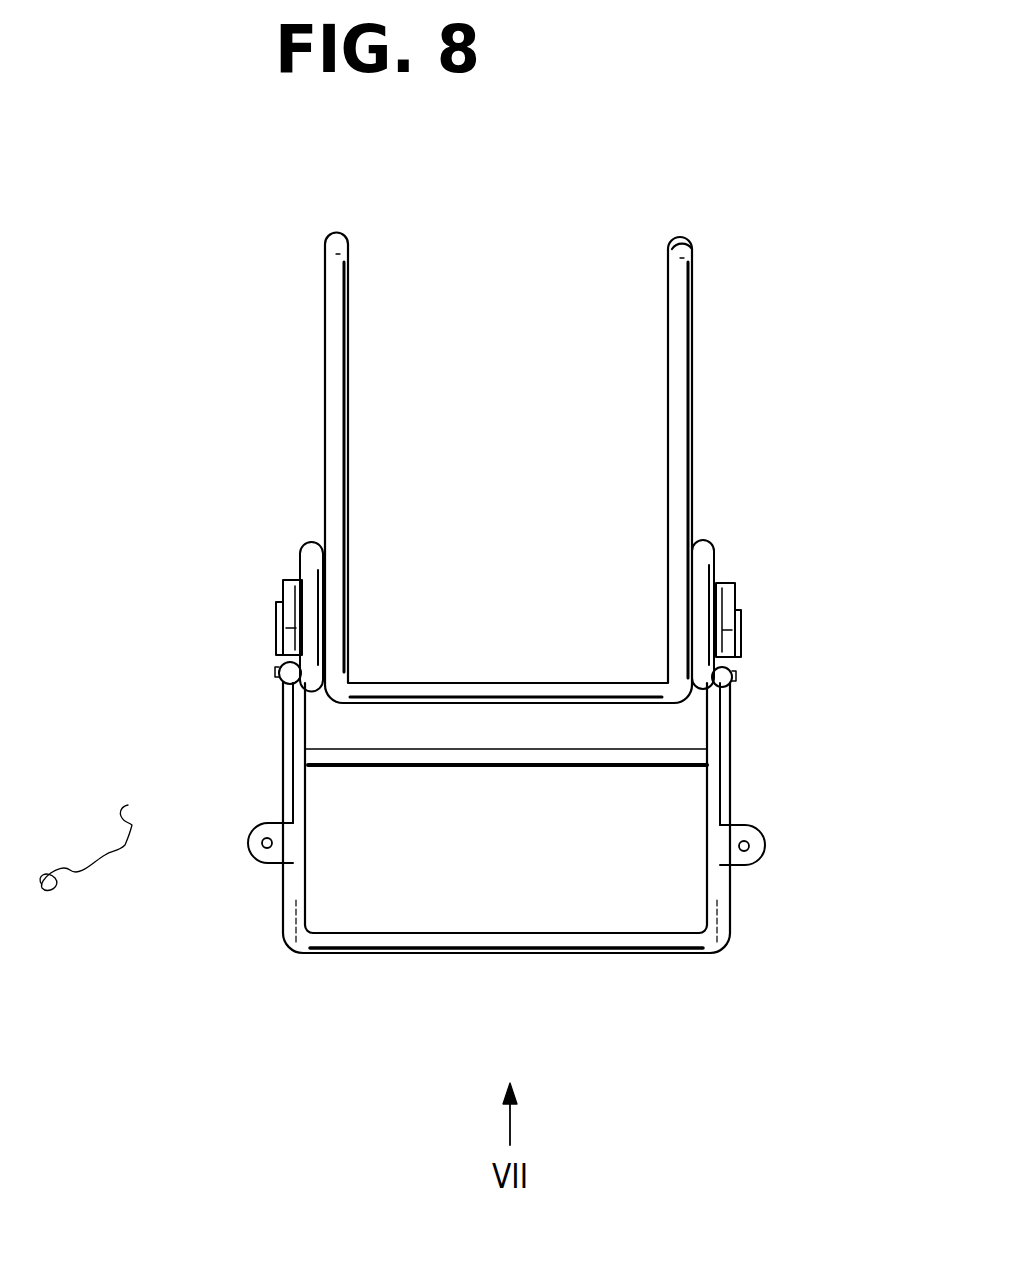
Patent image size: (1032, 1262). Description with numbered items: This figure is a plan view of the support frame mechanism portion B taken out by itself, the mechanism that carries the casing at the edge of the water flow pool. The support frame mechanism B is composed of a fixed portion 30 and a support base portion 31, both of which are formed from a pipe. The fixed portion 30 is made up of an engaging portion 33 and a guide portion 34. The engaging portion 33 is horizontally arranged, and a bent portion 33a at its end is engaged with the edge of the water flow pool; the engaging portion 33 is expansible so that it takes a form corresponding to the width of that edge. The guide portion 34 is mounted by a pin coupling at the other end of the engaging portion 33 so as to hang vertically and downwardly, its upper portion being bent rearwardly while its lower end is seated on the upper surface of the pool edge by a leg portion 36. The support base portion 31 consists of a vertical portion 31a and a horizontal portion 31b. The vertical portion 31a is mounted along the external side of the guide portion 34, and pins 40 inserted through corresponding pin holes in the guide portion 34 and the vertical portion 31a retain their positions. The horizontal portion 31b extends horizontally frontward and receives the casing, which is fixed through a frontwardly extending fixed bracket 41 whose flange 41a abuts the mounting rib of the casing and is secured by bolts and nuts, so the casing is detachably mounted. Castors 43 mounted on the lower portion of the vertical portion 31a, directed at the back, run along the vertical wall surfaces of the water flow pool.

The support frame mechanism portion B is at (250, 326).
The fixed portion 30 is at (620, 468).
The support base portion 31 is at (506, 877).
The vertical portion 31a is at (734, 683).
The horizontal portion 31b is at (560, 957).
The engaging portion 33 is at (348, 325).
The bent portion 33a is at (700, 268).
The guide portion 34 is at (712, 572).
The leg portion 36 is at (302, 541).
The pins 40 is at (279, 673).
The fixed bracket 41 is at (290, 765).
The flange 41a is at (251, 858).
The castors 43 is at (286, 595).